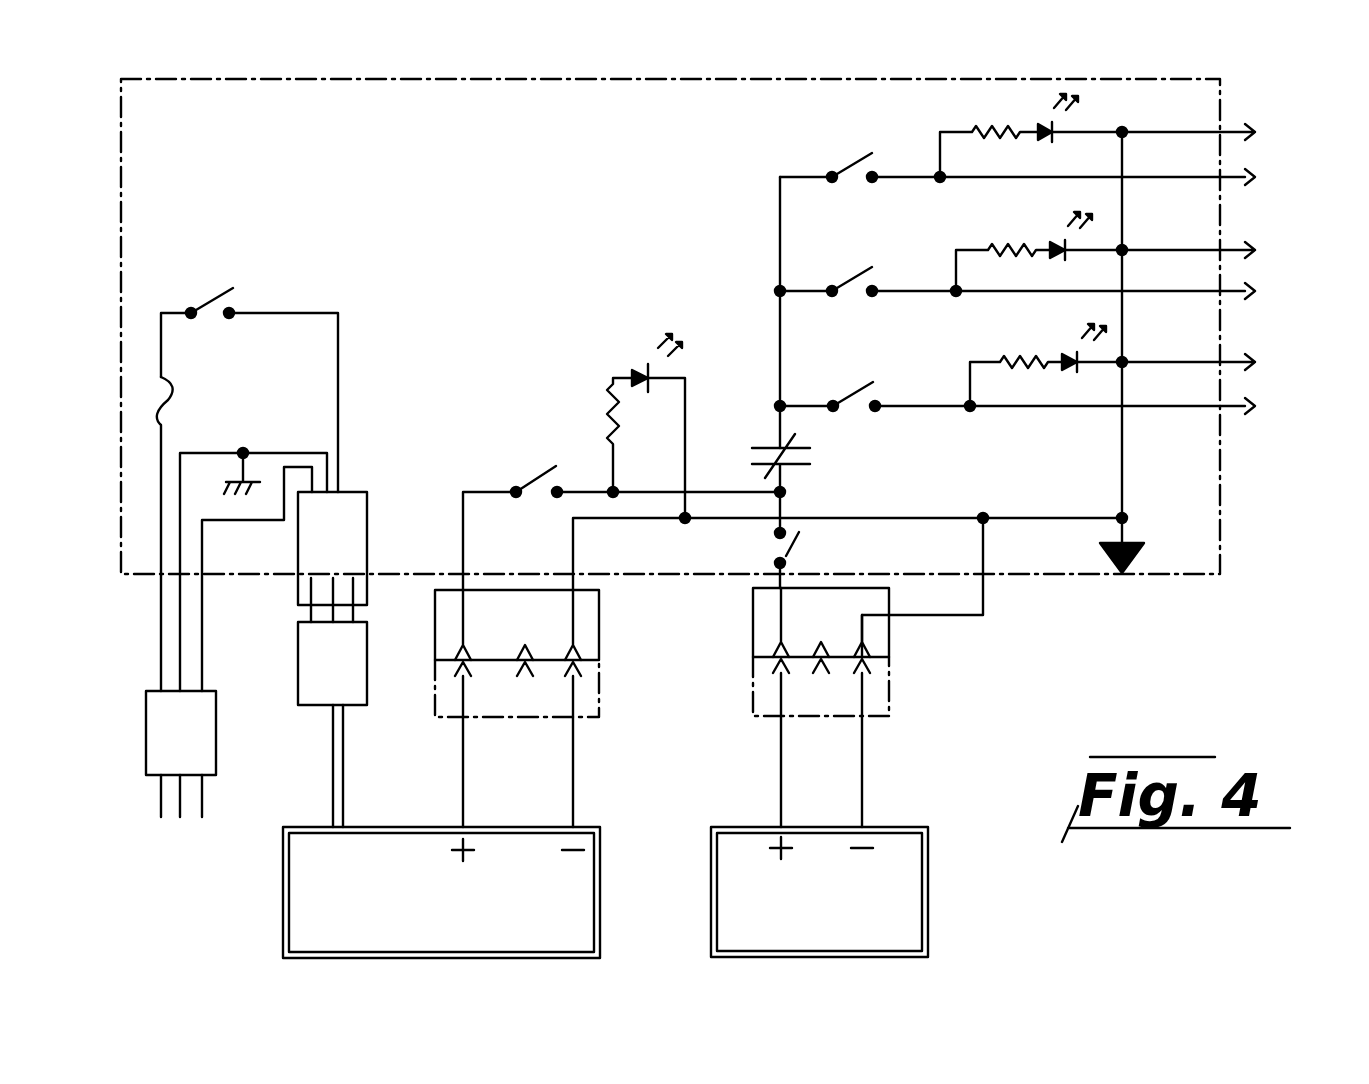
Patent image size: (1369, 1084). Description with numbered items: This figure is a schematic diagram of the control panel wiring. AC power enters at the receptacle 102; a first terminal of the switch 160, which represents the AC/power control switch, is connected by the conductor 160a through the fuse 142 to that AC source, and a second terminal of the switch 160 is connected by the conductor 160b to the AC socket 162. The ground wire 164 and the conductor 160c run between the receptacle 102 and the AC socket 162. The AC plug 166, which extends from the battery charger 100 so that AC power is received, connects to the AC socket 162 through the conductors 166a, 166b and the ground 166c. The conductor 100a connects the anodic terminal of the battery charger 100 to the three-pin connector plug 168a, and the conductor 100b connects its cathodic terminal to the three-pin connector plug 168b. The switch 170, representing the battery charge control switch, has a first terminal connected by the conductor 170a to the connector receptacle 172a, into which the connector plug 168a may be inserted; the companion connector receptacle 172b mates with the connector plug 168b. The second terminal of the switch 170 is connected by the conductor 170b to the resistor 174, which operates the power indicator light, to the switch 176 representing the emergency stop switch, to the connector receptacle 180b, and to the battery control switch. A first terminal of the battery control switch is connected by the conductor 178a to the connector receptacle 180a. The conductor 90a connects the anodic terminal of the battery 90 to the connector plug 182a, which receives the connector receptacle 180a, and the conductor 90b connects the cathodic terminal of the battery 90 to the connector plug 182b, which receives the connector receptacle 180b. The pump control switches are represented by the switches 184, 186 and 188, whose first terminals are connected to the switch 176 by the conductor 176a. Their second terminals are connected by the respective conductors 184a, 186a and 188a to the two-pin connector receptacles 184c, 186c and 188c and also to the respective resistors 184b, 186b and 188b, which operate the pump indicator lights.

The battery 90 is at (917, 880).
The conductor 90a is at (780, 773).
The conductor 90b is at (862, 788).
The battery charger 100 is at (293, 903).
The conductor 100a is at (463, 773).
The conductor 100b is at (575, 770).
The receptacle 102 is at (188, 747).
The fuse 142 is at (192, 415).
The switch 160 is at (203, 292).
The conductor 160a is at (160, 327).
The conductor 160b is at (272, 308).
The conductor 160c is at (205, 549).
The AC socket 162 is at (363, 507).
The ground wire 164 is at (243, 453).
The AC plug 166 is at (322, 678).
The conductor 166a is at (300, 612).
The conductor 166b is at (330, 617).
The ground 166c is at (350, 582).
The connector plug 168a is at (463, 667).
The connector plug 168b is at (576, 668).
The switch 170 is at (548, 470).
The conductor 170a is at (463, 512).
The conductor 170b is at (580, 487).
The connector receptacle 172a is at (462, 652).
The connector receptacle 172b is at (575, 650).
The resistor 174 is at (613, 390).
The switch 176 is at (800, 466).
The conductor 176a is at (780, 428).
The conductor 178a is at (790, 548).
The connector receptacle 180a is at (777, 648).
The connector receptacle 180b is at (862, 647).
The connector plug 182a is at (780, 670).
The connector plug 182b is at (862, 672).
The switch 184 is at (860, 392).
The conductor 184a is at (913, 408).
The resistor 184b is at (1028, 362).
The connector receptacle 184c is at (1257, 406).
The switch 186 is at (852, 280).
The conductor 186a is at (897, 293).
The resistor 186b is at (1010, 243).
The connector receptacle 186c is at (1257, 291).
The switch 188 is at (855, 152).
The conductor 188a is at (895, 178).
The resistor 188b is at (993, 127).
The connector receptacle 188c is at (1262, 177).